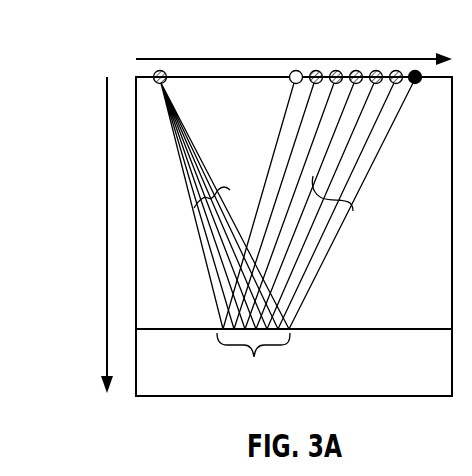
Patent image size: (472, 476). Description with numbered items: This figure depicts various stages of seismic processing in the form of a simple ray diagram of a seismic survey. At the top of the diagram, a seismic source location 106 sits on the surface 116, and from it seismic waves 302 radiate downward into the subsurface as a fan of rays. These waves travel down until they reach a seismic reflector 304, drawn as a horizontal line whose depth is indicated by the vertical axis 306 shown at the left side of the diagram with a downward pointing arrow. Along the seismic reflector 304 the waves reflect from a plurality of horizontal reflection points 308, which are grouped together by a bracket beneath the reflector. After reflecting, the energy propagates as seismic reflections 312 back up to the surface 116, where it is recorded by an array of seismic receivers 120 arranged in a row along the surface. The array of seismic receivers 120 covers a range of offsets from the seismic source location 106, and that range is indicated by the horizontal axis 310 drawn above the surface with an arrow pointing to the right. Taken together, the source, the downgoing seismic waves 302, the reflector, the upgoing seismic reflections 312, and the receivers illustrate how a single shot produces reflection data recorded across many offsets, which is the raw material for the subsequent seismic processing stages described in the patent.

The seismic source location 106 is at (158, 70).
The surface 116 is at (257, 75).
The array of seismic receivers 120 is at (423, 53).
The seismic waves 302 is at (186, 166).
The seismic reflector 304 is at (187, 328).
The vertical axis 306 is at (106, 237).
The horizontal reflection points 308 is at (253, 363).
The horizontal axis 310 is at (205, 57).
The seismic reflections 312 is at (296, 190).